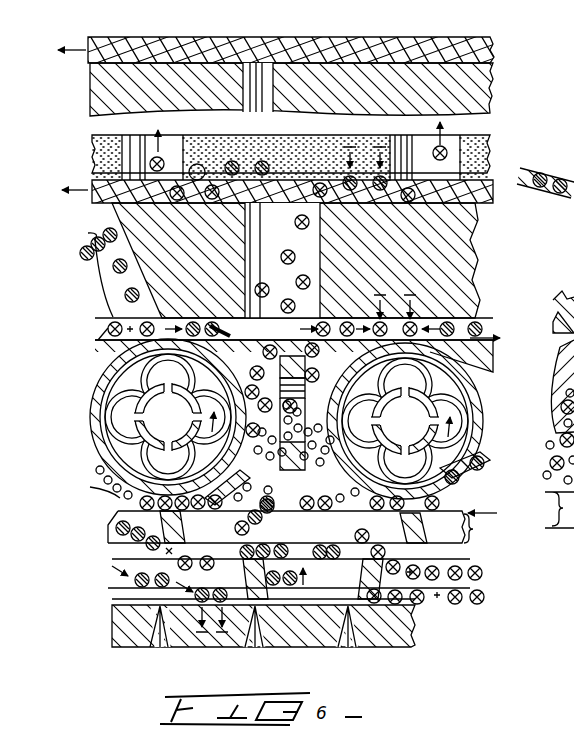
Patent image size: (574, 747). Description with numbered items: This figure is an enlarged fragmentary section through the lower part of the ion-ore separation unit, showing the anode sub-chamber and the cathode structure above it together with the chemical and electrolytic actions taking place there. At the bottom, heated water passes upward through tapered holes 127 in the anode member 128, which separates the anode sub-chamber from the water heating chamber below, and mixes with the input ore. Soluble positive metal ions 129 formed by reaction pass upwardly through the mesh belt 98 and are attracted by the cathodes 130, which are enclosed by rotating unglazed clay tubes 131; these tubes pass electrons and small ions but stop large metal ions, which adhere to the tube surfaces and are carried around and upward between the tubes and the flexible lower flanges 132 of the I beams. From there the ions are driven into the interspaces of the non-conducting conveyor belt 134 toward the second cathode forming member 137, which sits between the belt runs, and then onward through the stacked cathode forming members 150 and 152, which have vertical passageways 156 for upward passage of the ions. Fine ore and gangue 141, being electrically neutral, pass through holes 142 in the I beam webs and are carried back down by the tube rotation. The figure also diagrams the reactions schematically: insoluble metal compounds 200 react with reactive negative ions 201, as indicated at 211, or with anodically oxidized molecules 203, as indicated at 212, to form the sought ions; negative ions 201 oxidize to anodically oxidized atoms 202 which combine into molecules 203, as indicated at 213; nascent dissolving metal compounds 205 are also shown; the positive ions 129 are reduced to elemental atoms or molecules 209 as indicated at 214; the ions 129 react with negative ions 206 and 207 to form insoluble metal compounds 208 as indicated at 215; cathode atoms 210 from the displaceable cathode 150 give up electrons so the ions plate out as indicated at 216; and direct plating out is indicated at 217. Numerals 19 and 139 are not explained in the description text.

The housing section 19 is at (565, 542).
The mesh belt 98 is at (555, 511).
The tapered holes 127 is at (165, 642).
The anode member 128 is at (130, 640).
The soluble positive metal ions 129 is at (155, 156).
The cathodes 130 is at (140, 406).
The unglazed clay tubes 131 is at (94, 438).
The flexible lower flanges 132 is at (92, 478).
The conveyor belt 134 is at (490, 203).
The second cathode forming member 137 is at (478, 265).
The second rotor housing 139 is at (305, 362).
The fine ore and gangue 141 is at (92, 490).
The holes in I beam webs 142 is at (305, 386).
The cathode forming member 150 is at (491, 152).
The cathode forming member 152 is at (490, 90).
The vertical passageways 156 is at (313, 90).
The insoluble metal compounds 200 is at (120, 548).
The reactive negative ions 201 is at (124, 294).
The anodically oxidizing reactive negative ions 202 is at (232, 642).
The anodically oxidized molecules 203 is at (85, 259).
The nascent dissolving metal compounds 205 is at (248, 521).
The displaced negative metal ions 206 is at (113, 272).
The reactive negative ions 207 is at (258, 290).
The insoluble metal compounds 208 is at (222, 318).
The elemental atoms or molecules 209 is at (235, 163).
The cathode atoms 210 is at (195, 163).
The reaction of insoluble compounds with negative ions 211 is at (110, 527).
The reaction of insoluble compounds with oxidized molecules 212 is at (245, 545).
The anodic oxidation of negative ions 213 is at (125, 585).
The reduction of positive metal ions 214 is at (294, 317).
The formation of insoluble compounds 215 is at (96, 336).
The displacement plating by cathode atoms 216 is at (100, 232).
The plating out of positive ions 217 is at (353, 176).